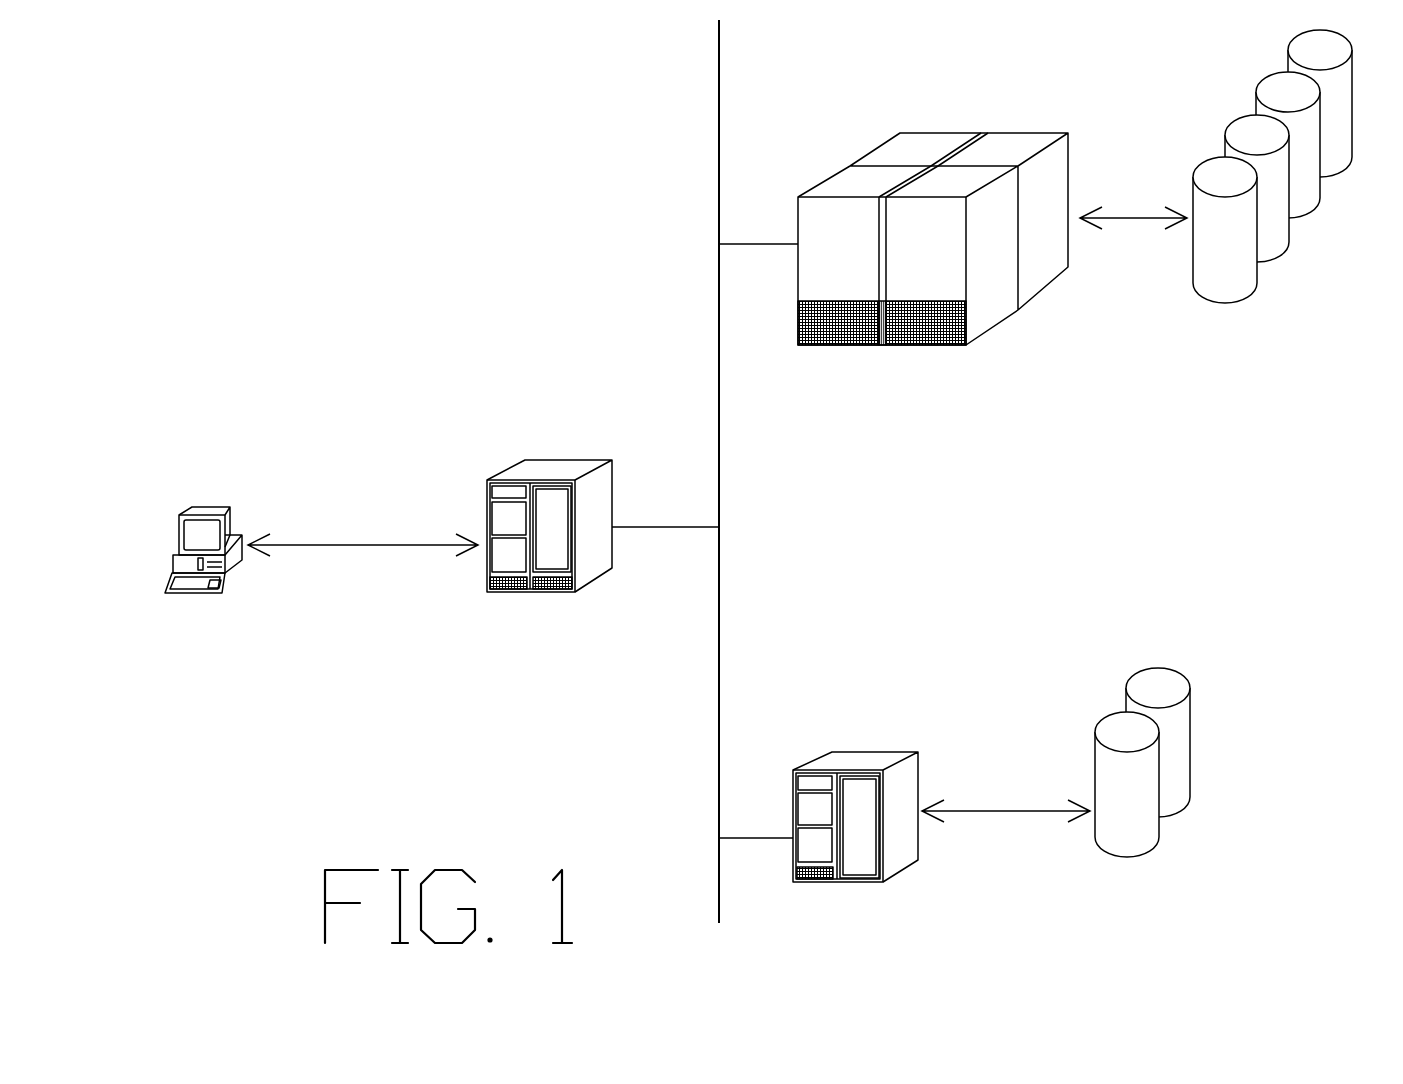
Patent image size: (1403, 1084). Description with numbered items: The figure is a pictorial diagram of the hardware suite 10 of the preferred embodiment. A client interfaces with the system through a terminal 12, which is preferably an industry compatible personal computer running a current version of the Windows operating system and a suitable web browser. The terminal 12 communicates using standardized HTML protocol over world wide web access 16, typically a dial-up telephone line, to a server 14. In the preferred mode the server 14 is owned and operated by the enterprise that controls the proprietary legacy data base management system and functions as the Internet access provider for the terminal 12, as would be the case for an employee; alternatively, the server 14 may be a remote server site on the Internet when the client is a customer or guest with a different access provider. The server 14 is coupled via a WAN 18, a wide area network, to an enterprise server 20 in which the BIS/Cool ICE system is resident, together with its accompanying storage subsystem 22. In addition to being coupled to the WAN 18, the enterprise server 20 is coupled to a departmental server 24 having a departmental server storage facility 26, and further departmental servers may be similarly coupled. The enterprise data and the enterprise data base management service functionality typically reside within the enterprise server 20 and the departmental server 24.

The hardware suite 10 is at (561, 203).
The terminal 12 is at (205, 505).
The server 14 is at (572, 470).
The world wide web access 16 is at (300, 545).
The WAN 18 is at (719, 434).
The enterprise server 20 is at (913, 143).
The storage subsystem 22 is at (1280, 82).
The departmental server 24 is at (835, 757).
The departmental server storage facility 26 is at (1157, 682).